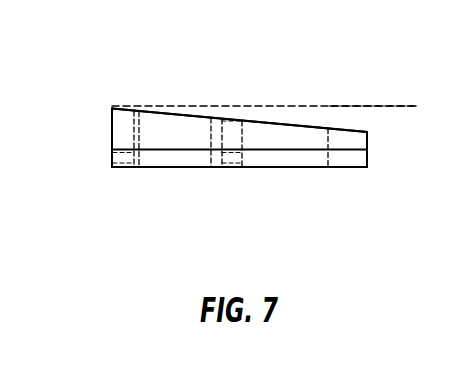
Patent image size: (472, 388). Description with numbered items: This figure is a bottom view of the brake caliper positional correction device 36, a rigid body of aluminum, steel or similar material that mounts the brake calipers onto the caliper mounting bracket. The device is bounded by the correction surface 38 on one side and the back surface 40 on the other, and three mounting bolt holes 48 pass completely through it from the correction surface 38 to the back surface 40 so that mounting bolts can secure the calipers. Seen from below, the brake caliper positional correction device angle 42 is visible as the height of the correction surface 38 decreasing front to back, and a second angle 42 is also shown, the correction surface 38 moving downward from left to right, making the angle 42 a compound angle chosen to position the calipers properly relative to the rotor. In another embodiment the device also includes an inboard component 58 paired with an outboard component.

The brake caliper positional correction device 36 is at (118, 49).
The correction surface 38 is at (257, 130).
The back surface 40 is at (147, 176).
The brake caliper positional correction device angle 42 is at (337, 175).
The mounting bolt holes 48 is at (180, 127).
The inboard component 58 is at (112, 130).